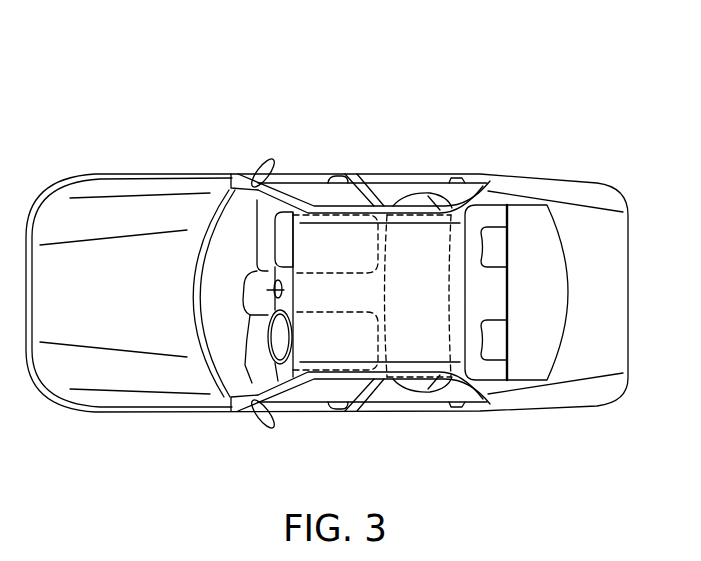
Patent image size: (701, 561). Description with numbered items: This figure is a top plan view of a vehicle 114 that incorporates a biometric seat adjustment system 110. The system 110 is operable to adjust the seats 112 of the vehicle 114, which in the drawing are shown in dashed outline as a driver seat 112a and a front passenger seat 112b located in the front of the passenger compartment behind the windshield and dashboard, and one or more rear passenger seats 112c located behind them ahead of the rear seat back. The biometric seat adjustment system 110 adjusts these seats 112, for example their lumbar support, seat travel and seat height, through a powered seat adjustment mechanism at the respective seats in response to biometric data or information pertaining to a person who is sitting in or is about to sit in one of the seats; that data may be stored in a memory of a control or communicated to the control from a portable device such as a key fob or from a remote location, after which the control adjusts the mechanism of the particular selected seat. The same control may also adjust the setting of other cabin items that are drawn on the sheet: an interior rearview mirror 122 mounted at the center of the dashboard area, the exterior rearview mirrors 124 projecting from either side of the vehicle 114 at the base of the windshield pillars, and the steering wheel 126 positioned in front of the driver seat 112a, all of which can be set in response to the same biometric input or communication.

The biometric seat adjustment system 110 is at (337, 150).
The seats 112 is at (372, 263).
The driver seat 112a is at (330, 348).
The front passenger seat 112b is at (330, 254).
The rear passenger seats 112c is at (418, 296).
The vehicle 114 is at (152, 160).
The interior rearview mirror 122 is at (284, 289).
The exterior rearview mirrors 124 is at (270, 160).
The steering wheel 126 is at (254, 331).